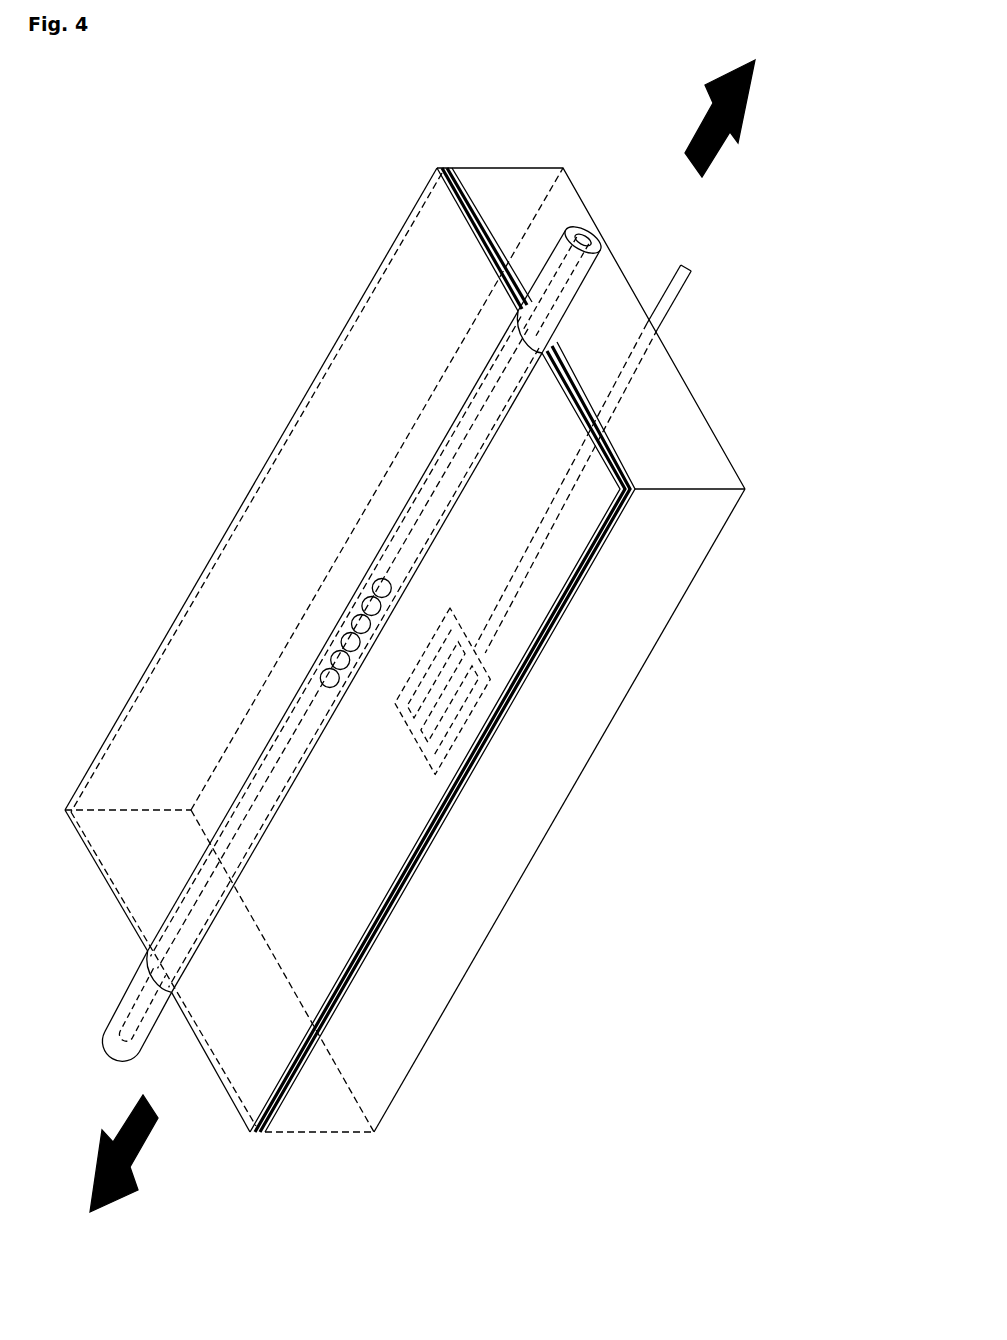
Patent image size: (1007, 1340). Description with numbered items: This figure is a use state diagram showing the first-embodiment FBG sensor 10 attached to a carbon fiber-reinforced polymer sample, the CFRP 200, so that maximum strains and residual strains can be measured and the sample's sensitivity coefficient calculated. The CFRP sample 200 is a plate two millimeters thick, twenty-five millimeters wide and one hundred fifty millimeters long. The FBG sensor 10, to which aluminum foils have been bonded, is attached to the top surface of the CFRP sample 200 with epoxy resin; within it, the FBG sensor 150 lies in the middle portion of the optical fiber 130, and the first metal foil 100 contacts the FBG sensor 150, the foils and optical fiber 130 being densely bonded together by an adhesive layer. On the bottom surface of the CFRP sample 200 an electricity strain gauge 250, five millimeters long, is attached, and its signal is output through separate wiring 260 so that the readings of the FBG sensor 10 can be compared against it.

The FBG sensor 10 is at (79, 666).
The first metal foil 100 is at (420, 287).
The optical fiber 130 is at (583, 231).
The FBG sensor 150 is at (322, 680).
The CFRP sample 200 is at (463, 977).
The electricity strain gauge 250 is at (465, 727).
The wiring 260 is at (683, 276).